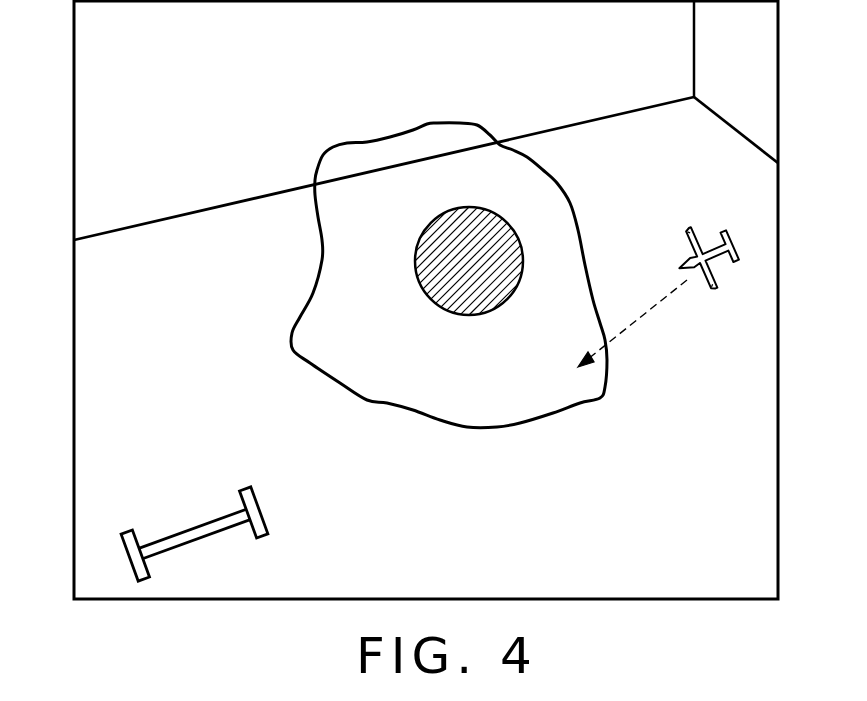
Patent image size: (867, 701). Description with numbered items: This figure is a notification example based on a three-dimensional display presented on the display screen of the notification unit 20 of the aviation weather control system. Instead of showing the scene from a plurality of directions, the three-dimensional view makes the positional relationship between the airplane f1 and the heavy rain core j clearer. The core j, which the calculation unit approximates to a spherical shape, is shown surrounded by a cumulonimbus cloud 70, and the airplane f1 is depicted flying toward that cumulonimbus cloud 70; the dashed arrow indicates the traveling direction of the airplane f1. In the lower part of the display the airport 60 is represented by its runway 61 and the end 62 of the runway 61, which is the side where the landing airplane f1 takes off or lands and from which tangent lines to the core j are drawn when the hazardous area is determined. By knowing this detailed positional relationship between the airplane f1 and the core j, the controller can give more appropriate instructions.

The notification unit 20 is at (74, 99).
The cumulonimbus cloud 70 is at (372, 160).
The core j is at (460, 222).
The airplane f1 is at (717, 290).
The airport 60 is at (225, 524).
The runway 61 is at (215, 537).
The end 62 is at (267, 518).